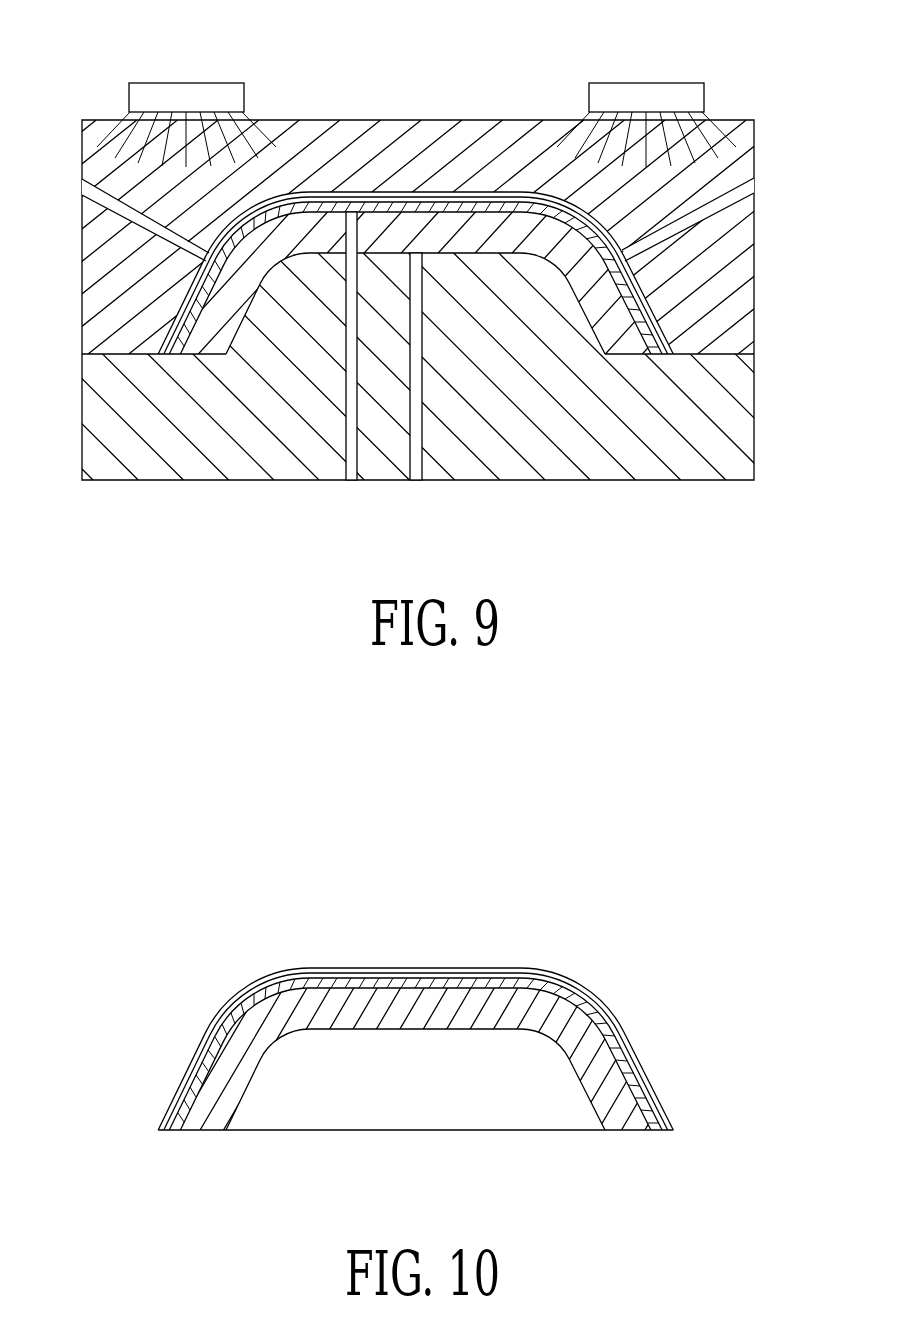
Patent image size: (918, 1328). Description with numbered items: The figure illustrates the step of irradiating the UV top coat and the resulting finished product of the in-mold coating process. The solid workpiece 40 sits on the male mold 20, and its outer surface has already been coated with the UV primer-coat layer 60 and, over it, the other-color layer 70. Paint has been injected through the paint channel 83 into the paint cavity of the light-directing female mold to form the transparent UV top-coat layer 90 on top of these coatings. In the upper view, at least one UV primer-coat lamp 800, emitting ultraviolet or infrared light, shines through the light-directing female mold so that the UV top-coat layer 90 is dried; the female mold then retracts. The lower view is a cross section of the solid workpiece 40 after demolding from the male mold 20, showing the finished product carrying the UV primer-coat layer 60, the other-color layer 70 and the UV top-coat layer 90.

In FIG. 9, the male mold 20 is at (674, 456).
In FIG. 9, the solid workpiece 40 is at (395, 227).
In FIG. 10, the solid workpiece 40 is at (632, 1135).
In FIG. 9, the UV primer-coat layer 60 is at (434, 197).
In FIG. 10, the UV primer-coat layer 60 is at (419, 1054).
In FIG. 9, the other-color layer 70 is at (448, 196).
In FIG. 10, the other-color layer 70 is at (540, 972).
In FIG. 9, the paint channel 83 is at (120, 193).
In FIG. 9, the UV top-coat layer 90 is at (333, 190).
In FIG. 10, the UV top-coat layer 90 is at (592, 982).
In FIG. 9, the UV primer-coat lamp 800 is at (158, 93).